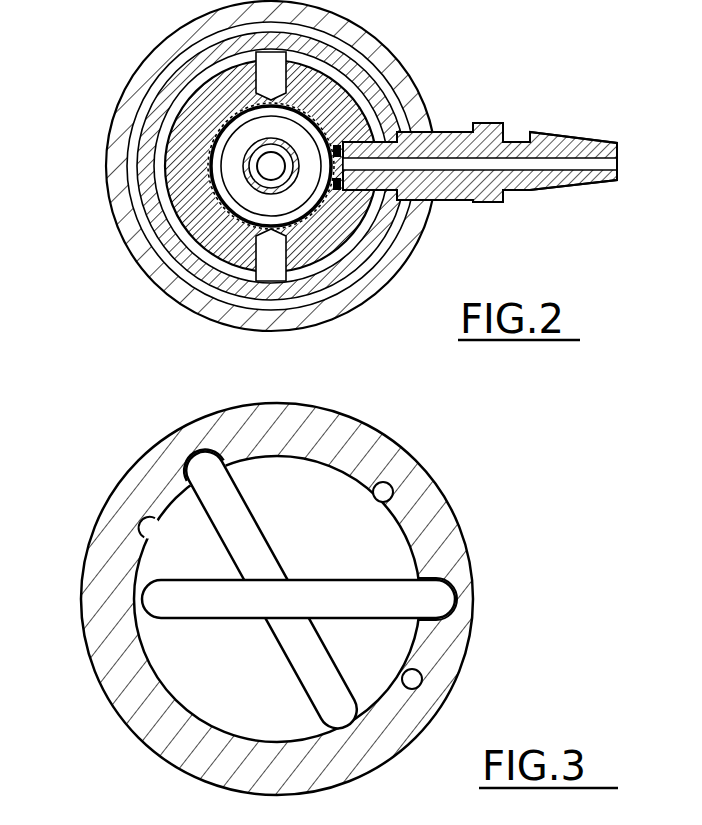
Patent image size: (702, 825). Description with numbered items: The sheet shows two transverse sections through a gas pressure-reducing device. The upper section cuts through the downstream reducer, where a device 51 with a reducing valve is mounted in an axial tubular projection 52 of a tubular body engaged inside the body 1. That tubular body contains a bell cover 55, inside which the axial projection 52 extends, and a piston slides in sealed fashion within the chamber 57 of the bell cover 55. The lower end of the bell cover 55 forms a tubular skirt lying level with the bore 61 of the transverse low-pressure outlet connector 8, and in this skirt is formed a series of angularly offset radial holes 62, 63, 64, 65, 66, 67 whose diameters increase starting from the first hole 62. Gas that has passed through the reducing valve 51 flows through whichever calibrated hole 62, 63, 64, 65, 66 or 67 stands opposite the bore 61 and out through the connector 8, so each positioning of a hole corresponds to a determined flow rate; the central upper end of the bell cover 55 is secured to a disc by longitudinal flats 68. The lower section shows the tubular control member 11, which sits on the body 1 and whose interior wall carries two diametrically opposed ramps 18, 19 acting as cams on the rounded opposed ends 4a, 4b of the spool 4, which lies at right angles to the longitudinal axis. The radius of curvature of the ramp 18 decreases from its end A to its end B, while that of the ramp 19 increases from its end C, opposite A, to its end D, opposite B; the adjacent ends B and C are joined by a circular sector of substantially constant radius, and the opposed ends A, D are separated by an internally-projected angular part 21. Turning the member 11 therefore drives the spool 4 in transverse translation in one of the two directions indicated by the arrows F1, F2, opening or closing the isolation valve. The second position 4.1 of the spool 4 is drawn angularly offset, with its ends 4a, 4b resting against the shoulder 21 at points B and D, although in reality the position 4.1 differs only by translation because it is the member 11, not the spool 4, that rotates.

In FIG. 2, the body 1 is at (378, 250).
In FIG. 2, the low-pressure outlet connector 8 is at (575, 190).
In FIG. 2, the tubular control member 11 is at (224, 327).
In FIG. 3, the tubular control member 11 is at (463, 504).
In FIG. 2, the device with a reducing valve 51 is at (245, 170).
In FIG. 2, the axial tubular projection 52 is at (330, 243).
In FIG. 2, the bell cover 55 is at (200, 210).
In FIG. 2, the chamber 57 is at (165, 127).
In FIG. 2, the bore 61 is at (518, 165).
In FIG. 2, the first radial hole 62 is at (360, 98).
In FIG. 2, the radial hole 63 is at (335, 57).
In FIG. 2, the radial hole 64 is at (192, 70).
In FIG. 2, the radial hole 65 is at (207, 113).
In FIG. 2, the radial hole 66 is at (237, 148).
In FIG. 2, the radial hole 67 is at (200, 185).
In FIG. 2, the longitudinal flats 68 is at (195, 272).
In FIG. 3, the spool 4 is at (178, 627).
In FIG. 3, the second position of the spool 4.1 is at (253, 520).
In FIG. 3, the rounded end of the spool 4a is at (138, 619).
In FIG. 3, the rounded end of the spool 4b is at (455, 619).
In FIG. 3, the ramp 18 is at (420, 688).
In FIG. 3, the ramp 19 is at (145, 538).
In FIG. 3, the internally-projected angular part 21 is at (392, 488).
In FIG. 3, the end of ramp 18 A is at (458, 597).
In FIG. 3, the end of ramp 18 B is at (348, 723).
In FIG. 3, the end of ramp 19 C is at (135, 601).
In FIG. 3, the end of ramp 19 D is at (188, 456).
In FIG. 3, the arrow F1 is at (320, 570).
In FIG. 3, the arrow F2 is at (395, 590).